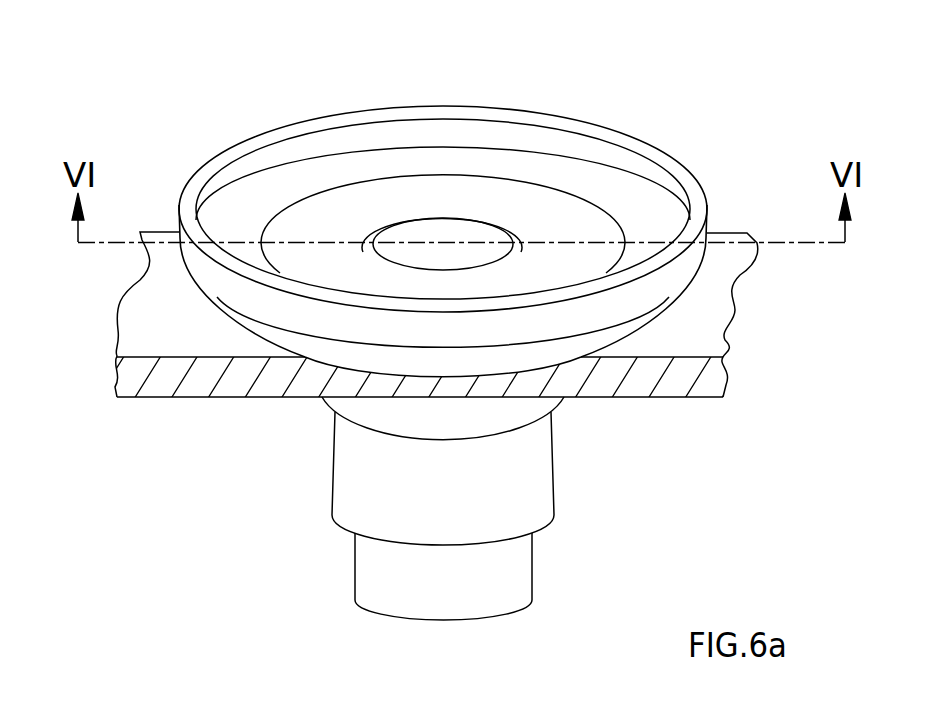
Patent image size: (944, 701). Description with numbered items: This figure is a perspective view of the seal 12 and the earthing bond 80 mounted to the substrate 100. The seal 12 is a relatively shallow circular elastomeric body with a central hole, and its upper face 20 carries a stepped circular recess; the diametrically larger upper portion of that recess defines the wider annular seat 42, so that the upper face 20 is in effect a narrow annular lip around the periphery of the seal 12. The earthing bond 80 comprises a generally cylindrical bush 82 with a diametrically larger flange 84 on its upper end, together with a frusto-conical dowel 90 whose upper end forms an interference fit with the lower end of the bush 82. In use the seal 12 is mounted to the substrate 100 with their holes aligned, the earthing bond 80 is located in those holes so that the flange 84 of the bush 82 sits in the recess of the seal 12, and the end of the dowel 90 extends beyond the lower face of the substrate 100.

The upper face 20 is at (200, 172).
The seal 12 is at (653, 155).
The wider annular seat 42 is at (310, 178).
The flange 84 is at (541, 215).
The substrate 100 is at (722, 257).
The earthing bond 80 is at (420, 508).
The bush 82 is at (538, 405).
The dowel 90 is at (553, 495).